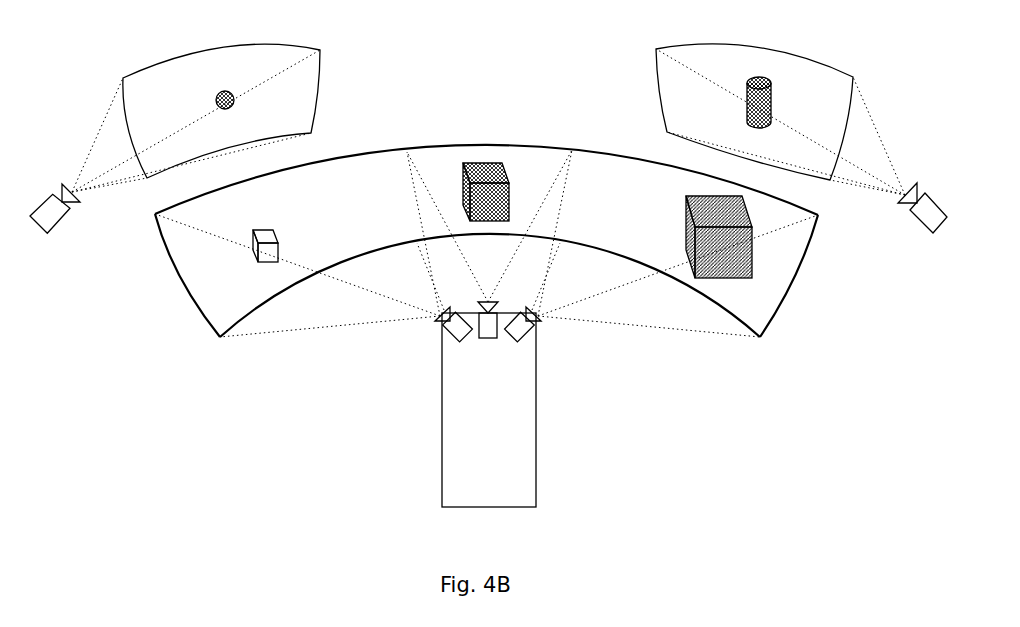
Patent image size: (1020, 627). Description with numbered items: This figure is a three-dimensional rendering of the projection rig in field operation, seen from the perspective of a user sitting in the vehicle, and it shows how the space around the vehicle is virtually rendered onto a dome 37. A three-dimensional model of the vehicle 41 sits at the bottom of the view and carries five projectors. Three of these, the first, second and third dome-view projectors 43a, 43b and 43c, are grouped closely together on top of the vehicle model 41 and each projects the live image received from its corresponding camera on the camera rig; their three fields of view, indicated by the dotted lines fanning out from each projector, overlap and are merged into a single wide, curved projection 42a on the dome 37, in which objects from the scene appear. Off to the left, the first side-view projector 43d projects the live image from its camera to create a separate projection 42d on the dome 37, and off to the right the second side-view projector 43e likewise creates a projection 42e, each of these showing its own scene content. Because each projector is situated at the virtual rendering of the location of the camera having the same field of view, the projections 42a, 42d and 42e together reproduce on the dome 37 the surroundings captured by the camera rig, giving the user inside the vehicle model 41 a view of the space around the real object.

The dome 37 is at (447, 110).
The 3D model of the vehicle 41 is at (508, 435).
The projection 42a is at (520, 160).
The projection 42d is at (152, 83).
The projection 42e is at (842, 93).
The projector DVP(1) 43a is at (448, 347).
The projector DVP(2) 43b is at (490, 332).
The projector DVP(3) 43c is at (510, 333).
The projector SVP(1) 43d is at (50, 217).
The projector SVP(2) 43e is at (925, 217).